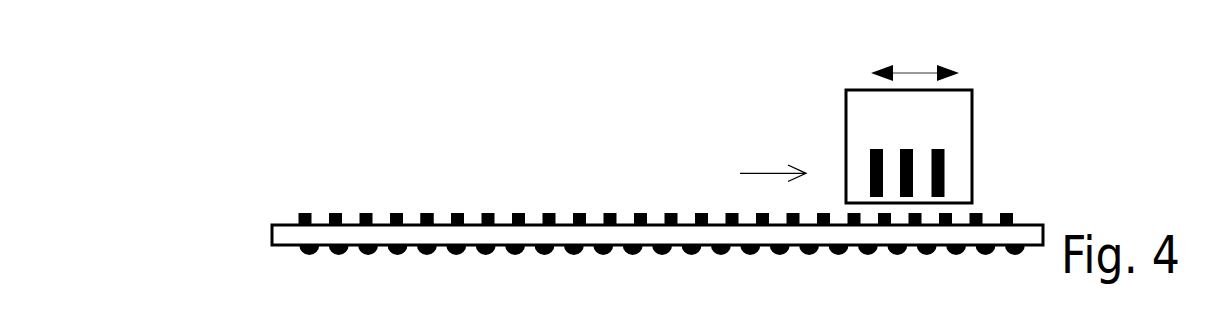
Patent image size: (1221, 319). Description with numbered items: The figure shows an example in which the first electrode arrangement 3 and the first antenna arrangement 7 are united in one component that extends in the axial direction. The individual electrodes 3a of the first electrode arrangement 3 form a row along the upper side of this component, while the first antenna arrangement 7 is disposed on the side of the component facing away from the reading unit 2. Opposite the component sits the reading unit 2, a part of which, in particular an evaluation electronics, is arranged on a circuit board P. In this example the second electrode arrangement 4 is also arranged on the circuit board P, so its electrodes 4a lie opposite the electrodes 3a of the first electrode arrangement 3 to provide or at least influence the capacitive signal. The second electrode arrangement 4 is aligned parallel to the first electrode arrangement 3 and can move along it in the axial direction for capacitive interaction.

The reading unit 2 is at (903, 132).
The first electrode arrangement 3 is at (255, 203).
The electrodes 3a is at (425, 213).
The second electrode arrangement 4 is at (760, 172).
The electrodes 4a is at (870, 150).
The first antenna arrangement 7 is at (260, 268).
The circuit board P is at (972, 90).